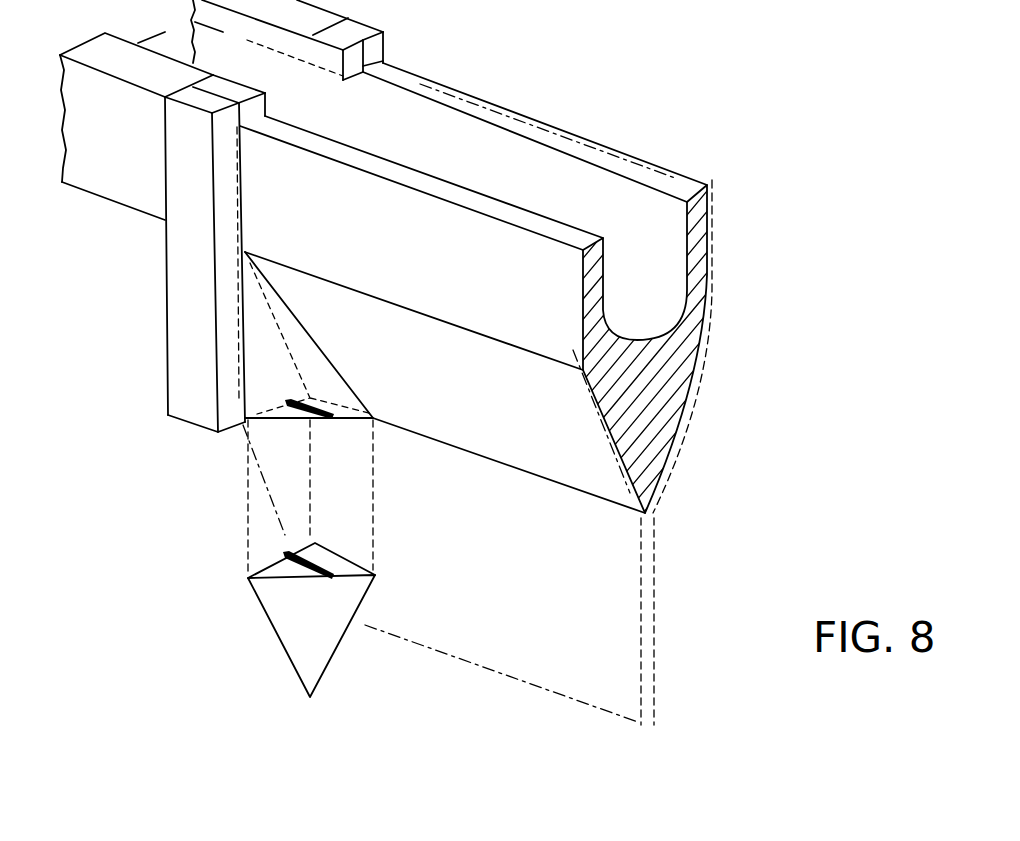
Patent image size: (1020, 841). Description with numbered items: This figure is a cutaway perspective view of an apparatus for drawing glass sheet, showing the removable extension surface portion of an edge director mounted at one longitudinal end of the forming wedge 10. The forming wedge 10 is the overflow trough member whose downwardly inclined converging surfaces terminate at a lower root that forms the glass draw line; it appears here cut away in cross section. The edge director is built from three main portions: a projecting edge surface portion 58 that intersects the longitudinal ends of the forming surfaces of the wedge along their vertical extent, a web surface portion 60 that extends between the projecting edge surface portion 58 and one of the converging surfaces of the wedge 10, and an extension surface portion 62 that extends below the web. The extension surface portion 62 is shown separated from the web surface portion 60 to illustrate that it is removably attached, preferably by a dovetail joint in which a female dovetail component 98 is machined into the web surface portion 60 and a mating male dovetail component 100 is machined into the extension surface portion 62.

The forming wedge 10 is at (652, 396).
The projecting edge surface portion 58 is at (162, 338).
The web surface portion 60 is at (333, 358).
The extension surface portion 62 is at (345, 633).
The female dovetail component 98 is at (290, 403).
The male dovetail component 100 is at (335, 557).